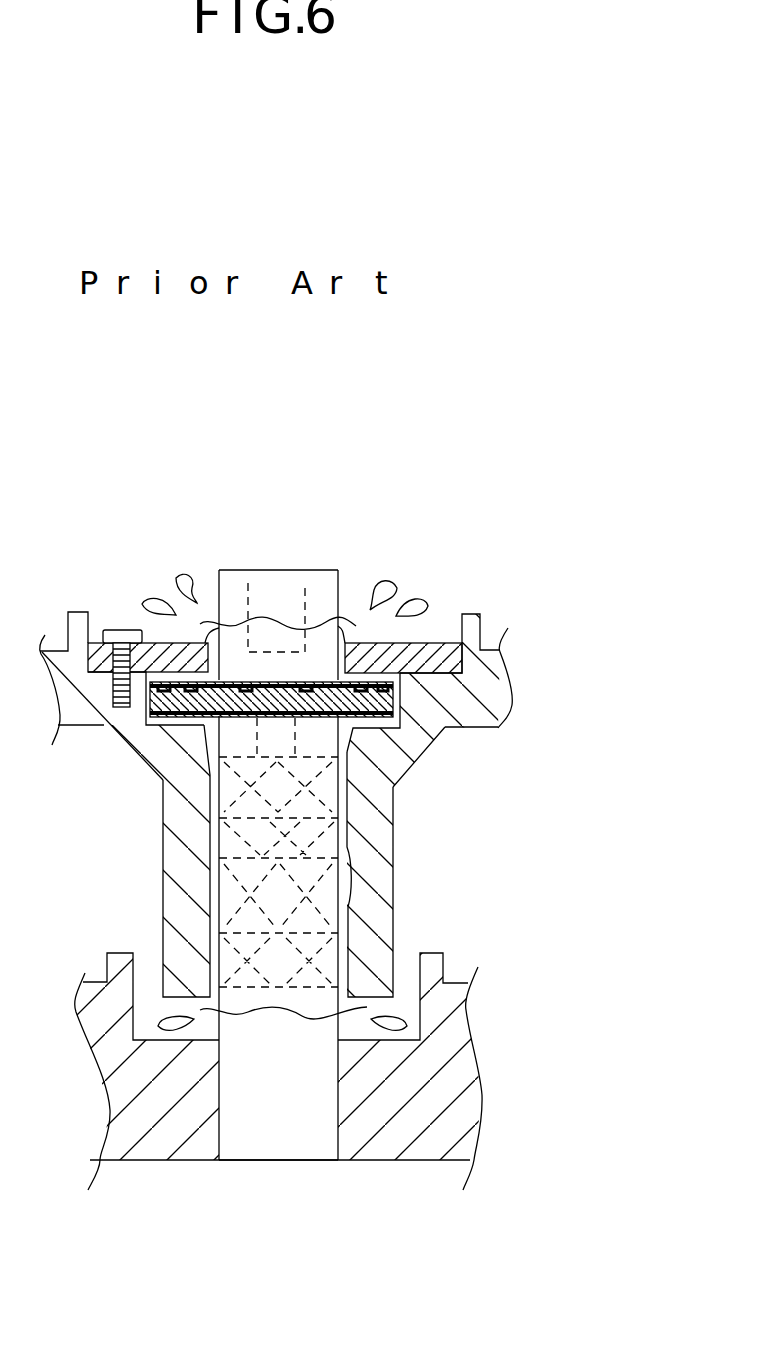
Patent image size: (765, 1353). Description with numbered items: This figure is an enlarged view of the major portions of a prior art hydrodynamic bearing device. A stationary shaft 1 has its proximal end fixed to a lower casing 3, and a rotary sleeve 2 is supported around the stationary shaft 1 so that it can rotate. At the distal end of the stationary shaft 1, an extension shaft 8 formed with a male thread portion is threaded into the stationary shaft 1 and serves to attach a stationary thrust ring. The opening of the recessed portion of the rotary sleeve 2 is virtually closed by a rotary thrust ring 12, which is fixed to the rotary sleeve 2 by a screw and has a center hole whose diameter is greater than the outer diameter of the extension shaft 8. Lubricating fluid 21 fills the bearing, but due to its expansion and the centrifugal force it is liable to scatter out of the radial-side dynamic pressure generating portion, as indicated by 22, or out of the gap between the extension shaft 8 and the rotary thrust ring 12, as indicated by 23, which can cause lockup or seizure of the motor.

The stationary shaft 1 is at (292, 1162).
The rotary sleeve 2 is at (483, 682).
The lower casing 3 is at (450, 1074).
The extension shaft 8 is at (325, 570).
The rotary thrust ring 12 is at (438, 640).
The lubricating fluid 21 is at (348, 863).
The scattering of lubricating fluid from the radial-side dynamic pressure generating 22 is at (156, 1042).
The scattering of lubricating fluid from the gap between extension shaft and rotary 23 is at (148, 580).